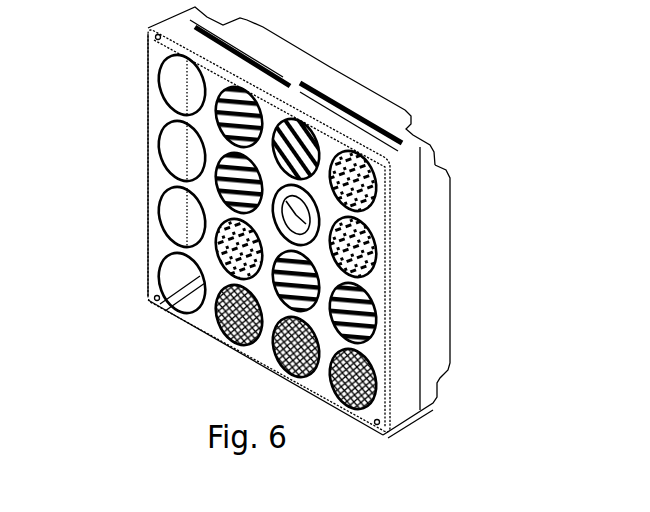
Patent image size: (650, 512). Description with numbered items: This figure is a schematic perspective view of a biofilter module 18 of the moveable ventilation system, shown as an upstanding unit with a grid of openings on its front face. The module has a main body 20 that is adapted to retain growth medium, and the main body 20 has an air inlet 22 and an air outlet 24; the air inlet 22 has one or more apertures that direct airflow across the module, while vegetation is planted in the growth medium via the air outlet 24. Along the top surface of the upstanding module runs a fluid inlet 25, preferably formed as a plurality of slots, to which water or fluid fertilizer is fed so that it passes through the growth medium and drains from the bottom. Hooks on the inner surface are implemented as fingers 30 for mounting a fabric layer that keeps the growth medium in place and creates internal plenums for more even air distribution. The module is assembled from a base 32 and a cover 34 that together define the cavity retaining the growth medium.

The biofilter module 18 is at (423, 429).
The main body 20 is at (410, 302).
The air inlet 22 is at (323, 233).
The air outlet 24 is at (157, 302).
The fluid inlet 25 is at (363, 113).
The fingers 30 is at (397, 150).
The base 32 is at (435, 203).
The cover 34 is at (157, 32).